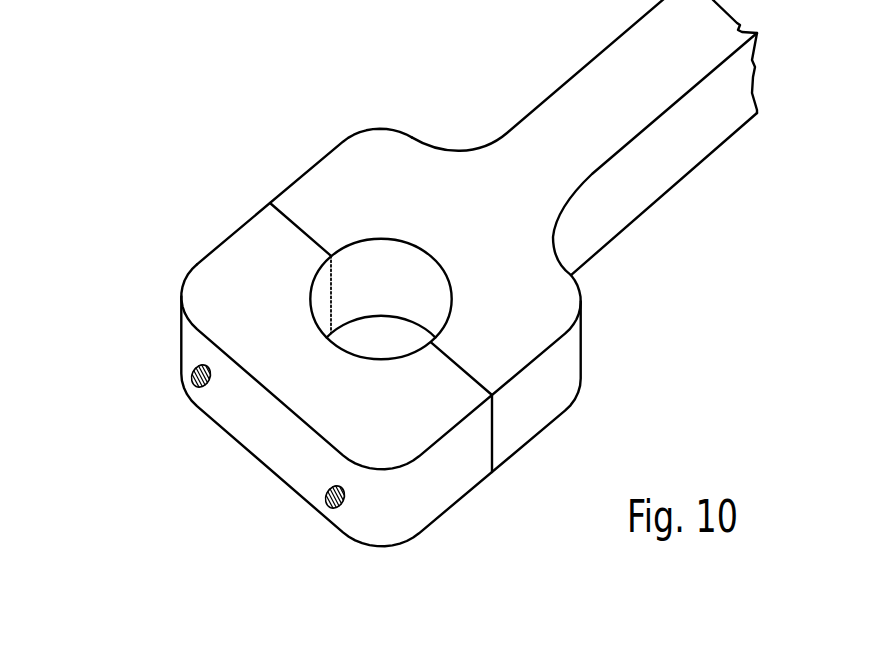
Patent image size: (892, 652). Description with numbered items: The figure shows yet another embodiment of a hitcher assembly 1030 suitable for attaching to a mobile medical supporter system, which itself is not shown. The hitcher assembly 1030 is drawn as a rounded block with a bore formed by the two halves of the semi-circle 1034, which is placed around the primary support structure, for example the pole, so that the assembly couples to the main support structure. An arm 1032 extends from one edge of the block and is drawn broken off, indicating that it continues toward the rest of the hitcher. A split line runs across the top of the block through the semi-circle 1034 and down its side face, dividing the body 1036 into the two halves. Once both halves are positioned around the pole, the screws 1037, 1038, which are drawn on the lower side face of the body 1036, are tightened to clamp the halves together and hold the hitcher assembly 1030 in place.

The hitcher assembly 1030 is at (245, 118).
The arm 1032 is at (582, 348).
The semi-circle 1034 is at (358, 240).
The clamp body 1036 is at (257, 465).
The screw 1037 is at (196, 386).
The screw 1038 is at (330, 503).